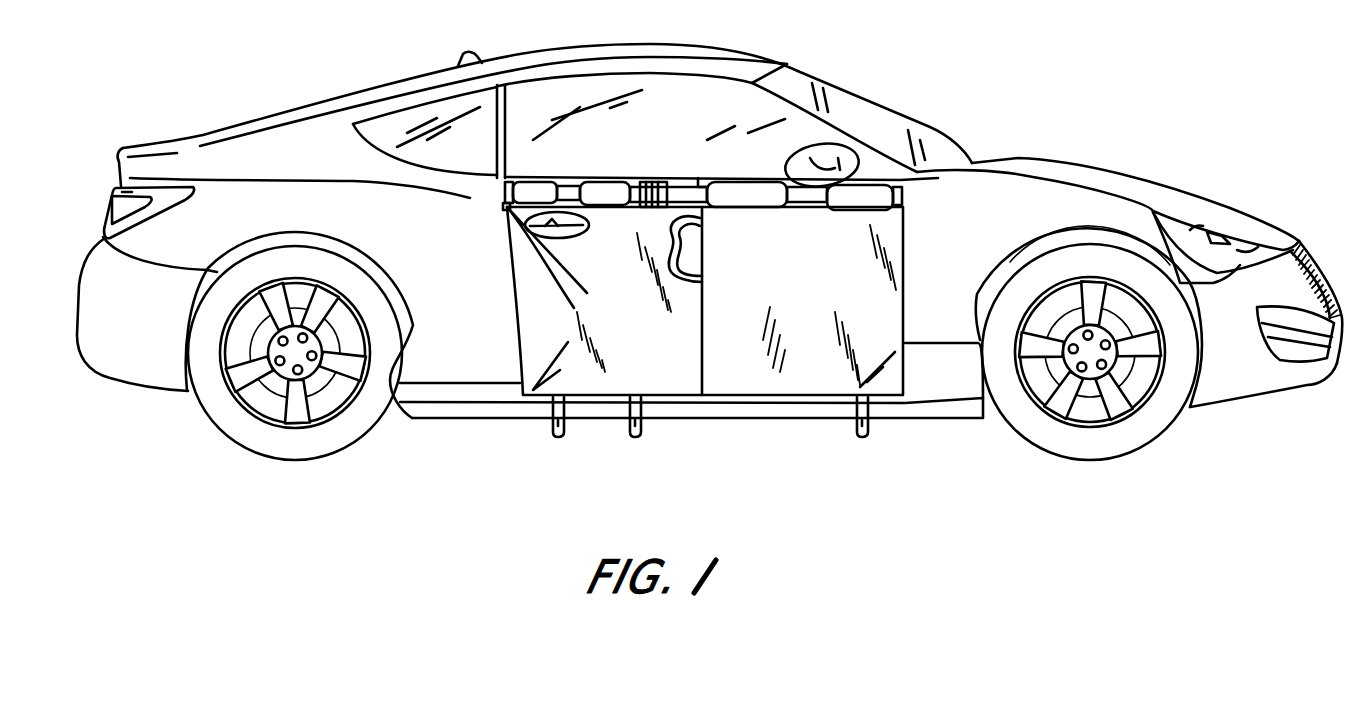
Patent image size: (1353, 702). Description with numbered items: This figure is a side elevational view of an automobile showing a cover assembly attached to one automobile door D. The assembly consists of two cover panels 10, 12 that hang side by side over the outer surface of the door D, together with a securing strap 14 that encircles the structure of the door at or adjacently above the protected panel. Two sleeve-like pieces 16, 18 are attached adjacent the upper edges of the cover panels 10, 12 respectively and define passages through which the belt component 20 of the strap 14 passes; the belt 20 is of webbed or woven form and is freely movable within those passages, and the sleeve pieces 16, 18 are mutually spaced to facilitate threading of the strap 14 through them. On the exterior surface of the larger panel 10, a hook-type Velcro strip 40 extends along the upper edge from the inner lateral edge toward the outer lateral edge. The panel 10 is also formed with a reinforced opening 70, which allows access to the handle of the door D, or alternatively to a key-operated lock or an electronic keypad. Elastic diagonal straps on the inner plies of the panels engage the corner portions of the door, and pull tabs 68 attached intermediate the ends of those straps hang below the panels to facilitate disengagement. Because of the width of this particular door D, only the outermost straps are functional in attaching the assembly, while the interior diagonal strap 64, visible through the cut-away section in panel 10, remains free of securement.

The cover panel 10 is at (665, 366).
The cover panel 12 is at (820, 308).
The securing strap 14 is at (908, 194).
The sleeve-like piece 16 is at (578, 152).
The sleeve-like piece 18 is at (744, 190).
The belt component 20 is at (818, 208).
The Velcro strip 40 is at (656, 180).
The diagonal strap 64 is at (697, 243).
The pull tab 68 is at (641, 428).
The reinforced opening 70 is at (528, 230).
The automobile door D is at (697, 78).